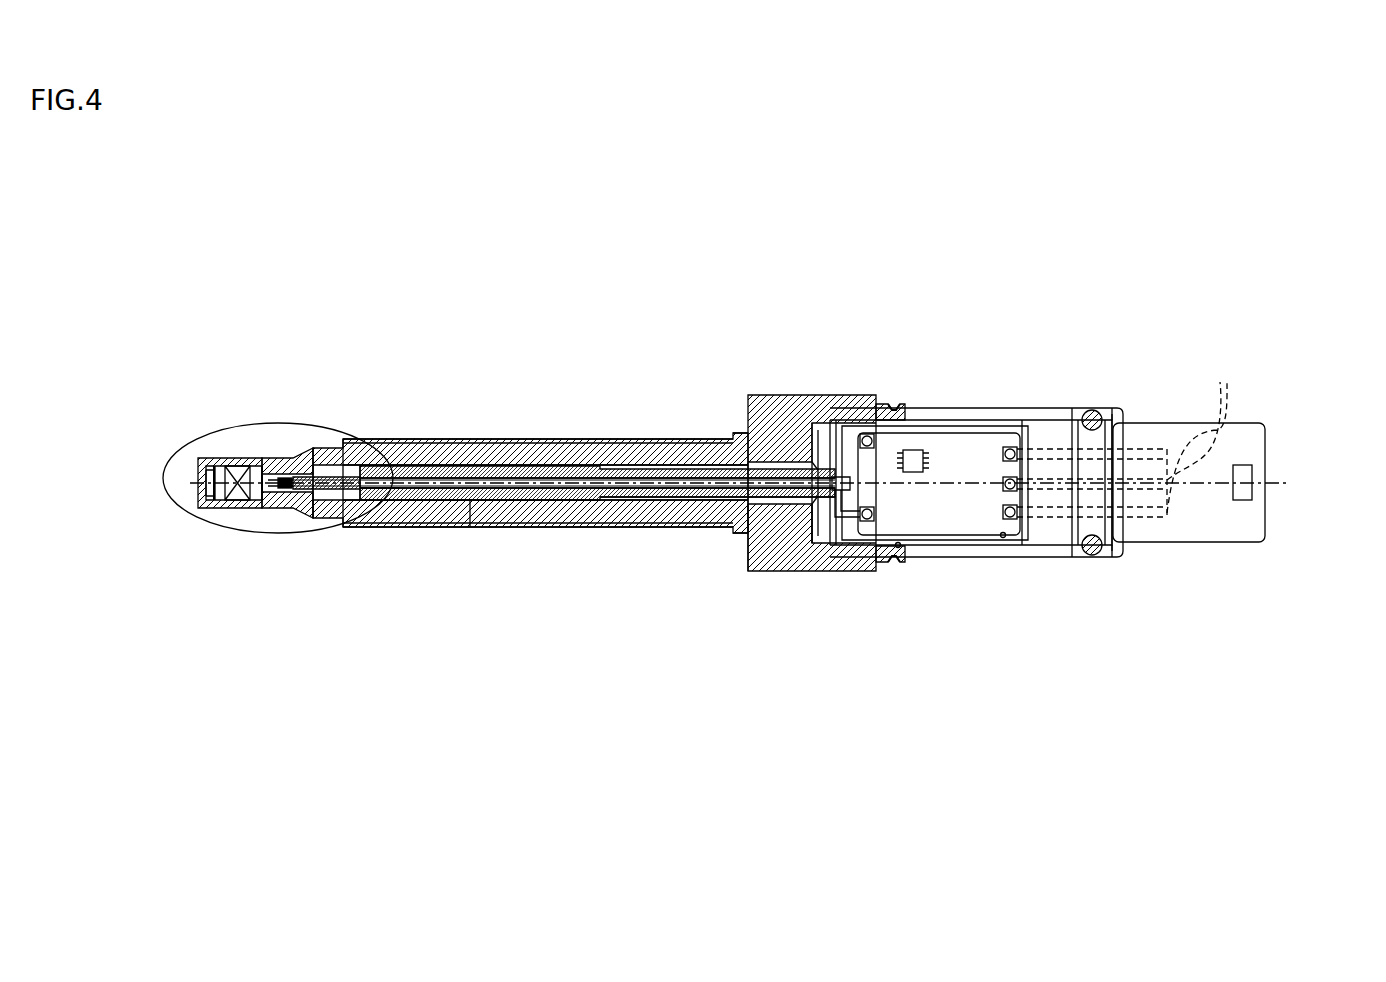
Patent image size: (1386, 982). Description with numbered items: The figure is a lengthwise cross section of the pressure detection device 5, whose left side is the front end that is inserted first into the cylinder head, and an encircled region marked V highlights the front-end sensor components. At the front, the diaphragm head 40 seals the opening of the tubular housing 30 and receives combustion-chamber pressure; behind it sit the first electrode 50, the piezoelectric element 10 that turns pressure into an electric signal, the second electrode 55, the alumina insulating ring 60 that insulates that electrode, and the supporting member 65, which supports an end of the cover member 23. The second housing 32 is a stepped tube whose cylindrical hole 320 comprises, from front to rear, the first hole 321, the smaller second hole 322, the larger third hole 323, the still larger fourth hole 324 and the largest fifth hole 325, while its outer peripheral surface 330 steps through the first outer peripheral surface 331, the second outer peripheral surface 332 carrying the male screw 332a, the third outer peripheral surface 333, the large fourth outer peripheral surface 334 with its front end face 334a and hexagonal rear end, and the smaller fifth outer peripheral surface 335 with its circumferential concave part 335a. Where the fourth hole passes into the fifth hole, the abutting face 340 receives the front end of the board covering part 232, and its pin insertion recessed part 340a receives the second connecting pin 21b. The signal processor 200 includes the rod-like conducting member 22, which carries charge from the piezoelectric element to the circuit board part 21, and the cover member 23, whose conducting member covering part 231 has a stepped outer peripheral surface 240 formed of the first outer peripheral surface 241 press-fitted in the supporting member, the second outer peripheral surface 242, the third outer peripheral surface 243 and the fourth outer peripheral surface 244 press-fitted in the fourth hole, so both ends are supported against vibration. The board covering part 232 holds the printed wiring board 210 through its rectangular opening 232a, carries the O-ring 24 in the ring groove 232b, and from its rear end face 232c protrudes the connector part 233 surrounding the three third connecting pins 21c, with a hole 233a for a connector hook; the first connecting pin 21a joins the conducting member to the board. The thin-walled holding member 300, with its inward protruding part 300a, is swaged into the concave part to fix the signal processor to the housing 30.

The pressure detection device 5 is at (200, 338).
The enlarged view region V is at (355, 417).
The diaphragm head 40 is at (200, 460).
The piezoelectric element 10 is at (240, 465).
The first electrode 50 is at (238, 460).
The second electrode 55 is at (272, 458).
The supporting member 65 is at (300, 472).
The insulating ring 60 is at (263, 497).
The first outer peripheral surface 331 is at (330, 450).
The cylindrical hole 320 is at (362, 445).
The second housing 32 is at (612, 528).
The first hole 321 is at (323, 519).
The second hole 322 is at (508, 498).
The third hole 323 is at (650, 498).
The male screw 332a is at (450, 440).
The second outer peripheral surface 332 is at (690, 440).
The third outer peripheral surface 333 is at (745, 434).
The outer peripheral surface 330 is at (533, 403).
The outer peripheral surface 240 is at (577, 467).
The O-ring 24 is at (1095, 557).
The first outer peripheral surface 241 is at (358, 502).
The second outer peripheral surface 242 is at (465, 501).
The third outer peripheral surface 243 is at (683, 521).
The fourth outer peripheral surface 244 is at (810, 526).
The conducting member covering part 231 is at (572, 501).
The conducting member 22 is at (655, 441).
The fourth outer peripheral surface 334 is at (760, 394).
The end face 334a is at (749, 562).
The fourth hole 324 is at (774, 562).
The fifth hole 325 is at (898, 548).
The abutting face 340 is at (830, 444).
The pin insertion recessed part 340a is at (800, 445).
The fifth outer peripheral surface 335 is at (886, 409).
The concave part 335a is at (901, 405).
The board covering part 232 is at (1037, 557).
The rectangular opening 232a is at (1003, 532).
The ring groove 232b is at (1087, 558).
The end face 232c is at (1119, 552).
The holding member 300 is at (1099, 409).
The protruding part 300a is at (1119, 414).
The signal processor 200 is at (1019, 348).
The cover member 23 is at (957, 397).
The circuit board part 21 is at (975, 545).
The printed wiring board 210 is at (955, 527).
The first connecting pin 21a is at (850, 541).
The second connecting pin 21b is at (848, 434).
The third connecting pins 21c is at (1205, 435).
The connector part 233 is at (1222, 545).
The hole 233a is at (1258, 485).
The housing 30 is at (612, 380).